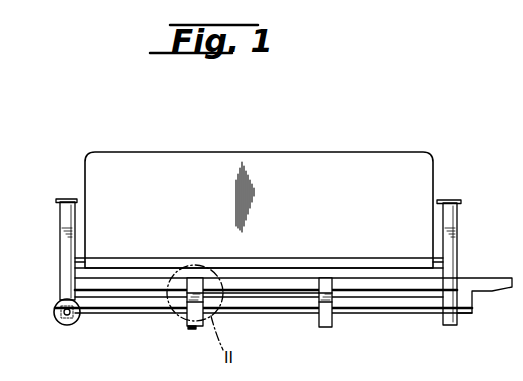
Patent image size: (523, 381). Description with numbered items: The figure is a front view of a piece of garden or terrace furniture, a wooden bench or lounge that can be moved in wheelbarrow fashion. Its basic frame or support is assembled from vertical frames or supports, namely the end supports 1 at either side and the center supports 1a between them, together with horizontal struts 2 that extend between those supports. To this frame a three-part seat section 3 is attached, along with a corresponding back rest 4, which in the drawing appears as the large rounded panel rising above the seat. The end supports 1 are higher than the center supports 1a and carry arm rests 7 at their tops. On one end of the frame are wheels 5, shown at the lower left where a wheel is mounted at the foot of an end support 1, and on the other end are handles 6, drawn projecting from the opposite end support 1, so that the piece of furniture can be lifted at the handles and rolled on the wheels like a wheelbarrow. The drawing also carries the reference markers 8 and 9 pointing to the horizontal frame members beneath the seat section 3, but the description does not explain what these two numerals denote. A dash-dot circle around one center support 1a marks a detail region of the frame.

The end supports 1 is at (65, 258).
The center supports 1a is at (192, 327).
The horizontal struts 2 is at (283, 275).
The seat section 3 is at (138, 264).
The back rest 4 is at (201, 165).
The wheels 5 is at (54, 313).
The handles 6 is at (495, 280).
The arm rests 7 is at (63, 198).
The intermediate member 8 is at (365, 285).
The lower rail 9 is at (395, 305).